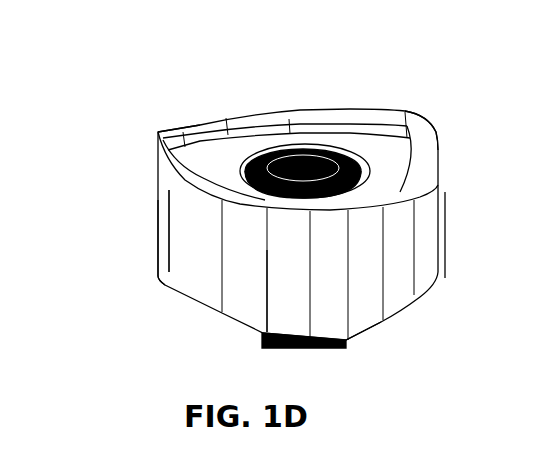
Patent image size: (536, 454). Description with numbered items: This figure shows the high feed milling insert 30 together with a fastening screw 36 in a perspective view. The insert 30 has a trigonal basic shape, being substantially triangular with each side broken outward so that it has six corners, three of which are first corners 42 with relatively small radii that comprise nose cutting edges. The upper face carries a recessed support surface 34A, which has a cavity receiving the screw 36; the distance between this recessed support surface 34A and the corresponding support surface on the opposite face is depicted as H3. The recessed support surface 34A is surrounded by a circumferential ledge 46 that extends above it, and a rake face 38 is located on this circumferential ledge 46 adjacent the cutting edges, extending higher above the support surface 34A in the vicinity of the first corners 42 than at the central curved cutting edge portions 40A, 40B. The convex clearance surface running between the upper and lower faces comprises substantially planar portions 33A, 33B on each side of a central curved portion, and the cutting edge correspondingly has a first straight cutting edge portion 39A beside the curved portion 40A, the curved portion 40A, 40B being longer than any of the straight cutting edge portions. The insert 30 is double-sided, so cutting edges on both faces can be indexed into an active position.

The high feed milling insert 30 is at (273, 78).
The screw 36 is at (317, 157).
The recessed support surface 34A is at (383, 155).
The rake face 38 is at (420, 136).
The circumferential ledge 46 is at (196, 129).
The first corner 42 is at (159, 133).
The curved portion 40A is at (211, 204).
The curved portion 40B is at (478, 7).
The planar portion 33A is at (283, 298).
The planar portion 33B is at (164, 259).
The first straight cutting edge portion 39A is at (286, 212).
The distance between recessed support surfaces H3 is at (386, 192).